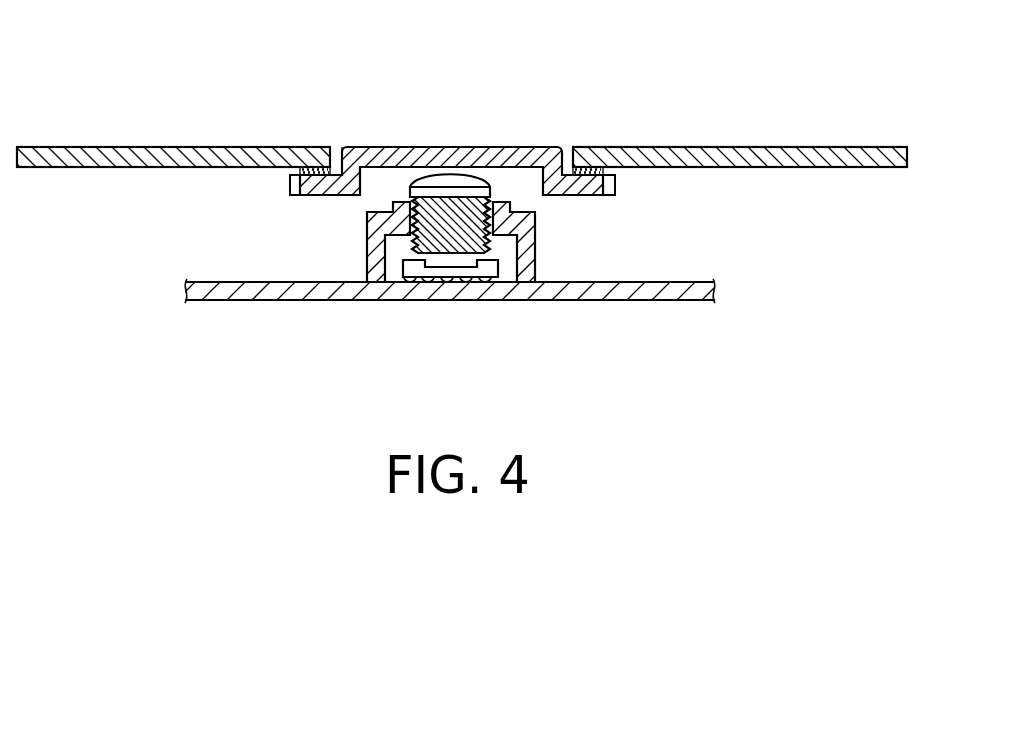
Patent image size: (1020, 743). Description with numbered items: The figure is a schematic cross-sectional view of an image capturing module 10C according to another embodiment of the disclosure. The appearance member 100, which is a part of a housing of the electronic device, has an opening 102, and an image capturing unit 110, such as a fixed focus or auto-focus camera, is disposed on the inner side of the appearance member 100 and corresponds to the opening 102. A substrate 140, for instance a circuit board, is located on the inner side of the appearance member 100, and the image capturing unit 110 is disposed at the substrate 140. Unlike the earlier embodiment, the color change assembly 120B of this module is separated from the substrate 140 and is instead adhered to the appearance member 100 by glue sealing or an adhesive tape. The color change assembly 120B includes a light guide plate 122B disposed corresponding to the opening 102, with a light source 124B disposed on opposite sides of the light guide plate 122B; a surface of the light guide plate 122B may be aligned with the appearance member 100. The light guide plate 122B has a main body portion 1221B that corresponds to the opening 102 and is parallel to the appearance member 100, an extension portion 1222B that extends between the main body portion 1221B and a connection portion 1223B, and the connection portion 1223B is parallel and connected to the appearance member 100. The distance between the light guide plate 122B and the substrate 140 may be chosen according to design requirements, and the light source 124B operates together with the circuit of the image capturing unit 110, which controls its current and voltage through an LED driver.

The image capturing module 10C is at (102, 83).
The appearance member 100 is at (678, 147).
The opening 102 is at (336, 142).
The color change assembly 120B is at (451, 175).
The light guide plate 122B is at (417, 137).
The main body portion 1221B is at (507, 147).
The extension portion 1222B is at (558, 147).
The connection portion 1223B is at (583, 195).
The light source 124B is at (292, 182).
The image capturing unit 110 is at (450, 237).
The substrate 140 is at (233, 292).